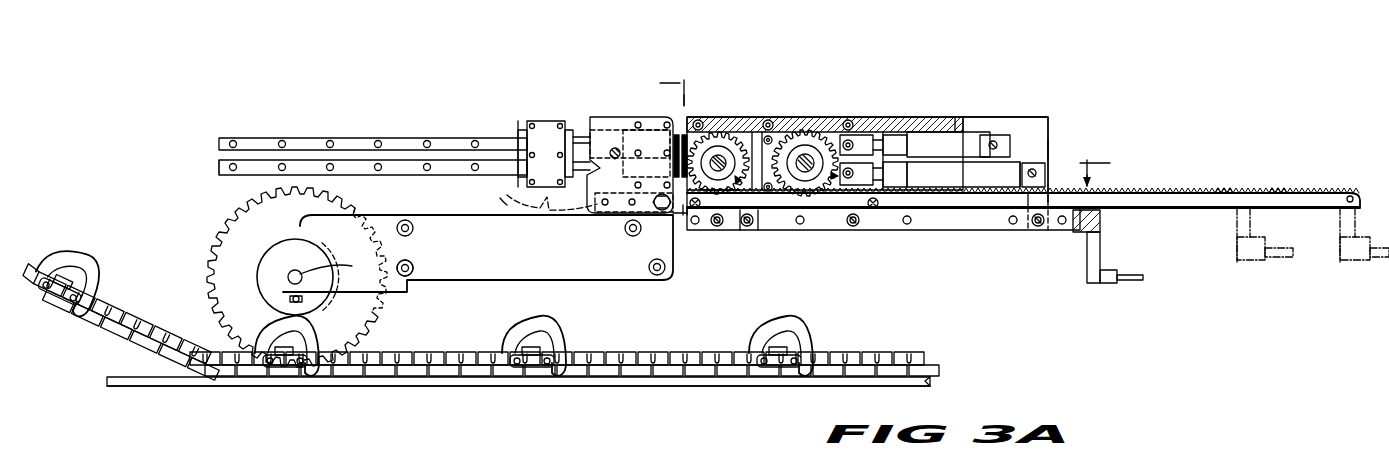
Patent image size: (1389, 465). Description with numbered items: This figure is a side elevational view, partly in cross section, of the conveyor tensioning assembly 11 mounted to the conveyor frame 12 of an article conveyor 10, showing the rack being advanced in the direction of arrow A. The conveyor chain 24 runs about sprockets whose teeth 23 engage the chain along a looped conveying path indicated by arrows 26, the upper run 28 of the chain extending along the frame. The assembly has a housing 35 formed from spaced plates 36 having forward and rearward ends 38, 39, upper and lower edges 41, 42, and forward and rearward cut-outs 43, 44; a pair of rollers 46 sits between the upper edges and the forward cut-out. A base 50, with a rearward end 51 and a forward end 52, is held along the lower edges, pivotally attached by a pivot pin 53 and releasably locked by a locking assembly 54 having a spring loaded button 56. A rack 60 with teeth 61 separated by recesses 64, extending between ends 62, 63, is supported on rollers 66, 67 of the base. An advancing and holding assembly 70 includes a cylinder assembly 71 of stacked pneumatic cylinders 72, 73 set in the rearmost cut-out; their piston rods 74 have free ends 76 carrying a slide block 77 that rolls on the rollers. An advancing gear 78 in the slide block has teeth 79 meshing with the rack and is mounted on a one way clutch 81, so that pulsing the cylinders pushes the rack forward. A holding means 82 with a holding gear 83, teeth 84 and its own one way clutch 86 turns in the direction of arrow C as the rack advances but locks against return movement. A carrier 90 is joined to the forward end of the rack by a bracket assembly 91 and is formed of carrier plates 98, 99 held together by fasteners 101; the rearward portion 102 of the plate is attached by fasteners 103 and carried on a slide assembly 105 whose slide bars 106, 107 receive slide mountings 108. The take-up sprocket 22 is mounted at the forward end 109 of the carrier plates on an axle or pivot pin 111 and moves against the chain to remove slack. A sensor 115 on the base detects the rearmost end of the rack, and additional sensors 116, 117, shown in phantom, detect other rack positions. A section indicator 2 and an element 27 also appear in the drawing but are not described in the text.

The article conveyor 10 is at (207, 422).
The conveyor tensioning assembly 11 is at (889, 106).
The conveyor frame 12 is at (263, 388).
The take-up sprocket 22 is at (225, 284).
The teeth 23 is at (210, 272).
The conveyor chain 24 is at (80, 334).
The arrows 26 is at (580, 397).
The carriage on incline 27 is at (115, 337).
The upper run 28 is at (445, 352).
The housing 35 is at (1041, 127).
The housing plates 36 is at (1021, 155).
The forward end 38 is at (685, 119).
The rearward end 39 is at (1051, 172).
The upper edge 41 is at (1034, 108).
The lower edge 42 is at (1027, 196).
The forward cut-out 43 is at (756, 135).
The rearward cut-out 44 is at (961, 127).
The rollers 46 is at (849, 122).
The base 50 is at (958, 226).
The rearward end 51 is at (1101, 232).
The forward end 52 is at (688, 217).
The pivot pin 53 is at (1040, 227).
The locking assembly 54 is at (754, 230).
The spring loaded button 56 is at (745, 228).
The rack 60 is at (1226, 212).
The rack teeth 61 is at (1172, 200).
The forward end of rack 62 is at (654, 212).
The rearmost end of rack 63 is at (1320, 209).
The recesses 64 is at (1278, 190).
The roller 66 is at (682, 214).
The roller 67 is at (877, 208).
The advancing and holding assembly 70 is at (787, 216).
The cylinder assembly 71 is at (1049, 150).
The pneumatic cylinder 72 is at (962, 158).
The pneumatic cylinder 73 is at (968, 188).
The piston rod 74 is at (898, 150).
The free end 76 is at (886, 138).
The slide block 77 is at (851, 180).
The advancing gear 78 is at (839, 181).
The teeth 79 is at (794, 137).
The one way clutch 81 is at (808, 172).
The holding means 82 is at (721, 114).
The holding gear 83 is at (723, 152).
The teeth 84 is at (697, 120).
The one way clutch 86 is at (660, 151).
The carrier 90 is at (516, 303).
The bracket assembly 91 is at (537, 195).
The carrier plate 98 is at (525, 207).
The carrier plate 99 is at (413, 265).
The fasteners 101 is at (605, 206).
The rearward portion 102 is at (590, 127).
The fasteners 103 is at (407, 294).
The slide assembly 105 is at (517, 119).
The slide bar 106 is at (366, 140).
The slide bar 107 is at (261, 165).
The slide mountings 108 is at (545, 128).
The forward end 109 is at (293, 252).
The axle or pivot pin 111 is at (300, 274).
The sensor 115 is at (1101, 262).
The sensor 116 is at (1258, 274).
The sensor 117 is at (1370, 270).
The arrow A is at (857, 238).
The arrow C is at (718, 192).
The section line 2 is at (888, 123).